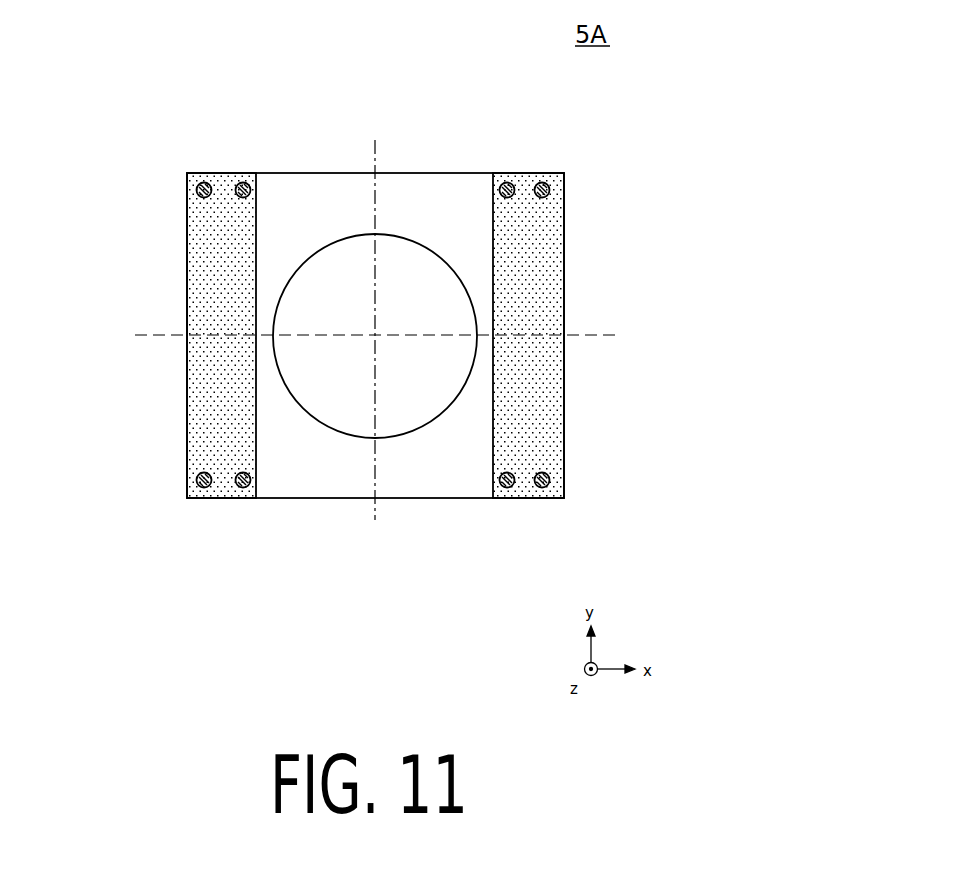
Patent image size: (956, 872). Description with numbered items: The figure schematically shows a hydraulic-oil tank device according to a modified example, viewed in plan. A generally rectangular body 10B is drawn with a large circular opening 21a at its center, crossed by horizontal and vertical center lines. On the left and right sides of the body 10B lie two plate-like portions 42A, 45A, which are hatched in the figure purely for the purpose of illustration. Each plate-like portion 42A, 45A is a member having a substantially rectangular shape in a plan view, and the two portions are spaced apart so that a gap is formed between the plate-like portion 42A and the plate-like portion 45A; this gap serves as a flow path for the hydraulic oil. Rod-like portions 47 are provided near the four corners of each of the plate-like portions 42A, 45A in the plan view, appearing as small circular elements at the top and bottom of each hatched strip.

The base plate 10B is at (408, 330).
The opening 21a is at (269, 329).
The plate-like portion 42A is at (169, 335).
The plate-like portion 45A is at (584, 335).
The rod-like portions 47 is at (381, 337).